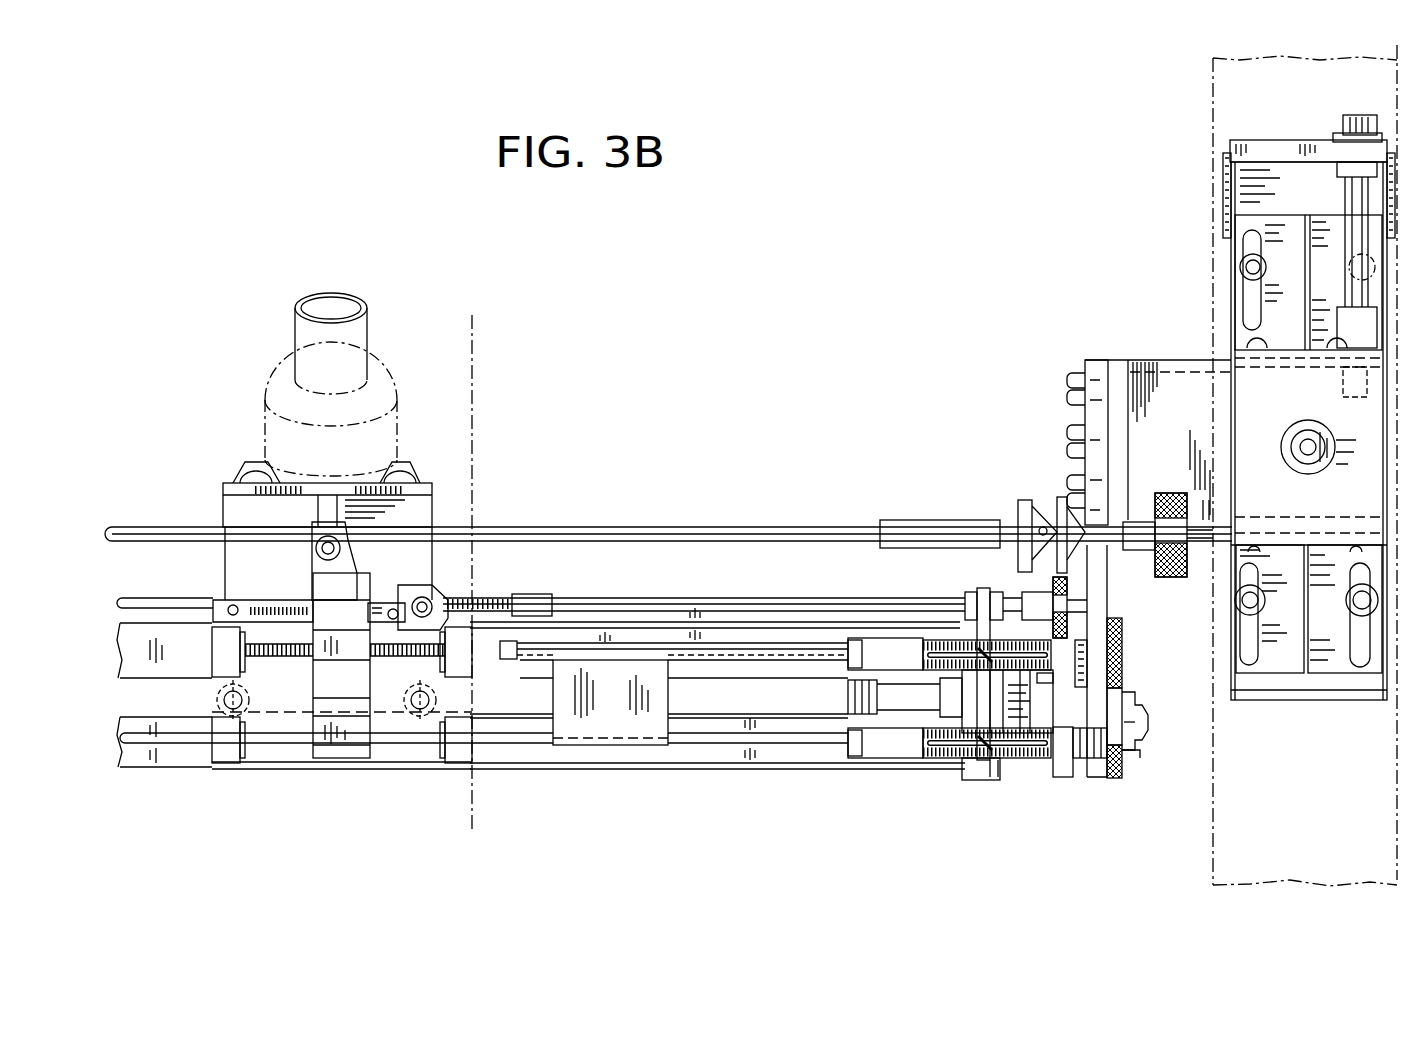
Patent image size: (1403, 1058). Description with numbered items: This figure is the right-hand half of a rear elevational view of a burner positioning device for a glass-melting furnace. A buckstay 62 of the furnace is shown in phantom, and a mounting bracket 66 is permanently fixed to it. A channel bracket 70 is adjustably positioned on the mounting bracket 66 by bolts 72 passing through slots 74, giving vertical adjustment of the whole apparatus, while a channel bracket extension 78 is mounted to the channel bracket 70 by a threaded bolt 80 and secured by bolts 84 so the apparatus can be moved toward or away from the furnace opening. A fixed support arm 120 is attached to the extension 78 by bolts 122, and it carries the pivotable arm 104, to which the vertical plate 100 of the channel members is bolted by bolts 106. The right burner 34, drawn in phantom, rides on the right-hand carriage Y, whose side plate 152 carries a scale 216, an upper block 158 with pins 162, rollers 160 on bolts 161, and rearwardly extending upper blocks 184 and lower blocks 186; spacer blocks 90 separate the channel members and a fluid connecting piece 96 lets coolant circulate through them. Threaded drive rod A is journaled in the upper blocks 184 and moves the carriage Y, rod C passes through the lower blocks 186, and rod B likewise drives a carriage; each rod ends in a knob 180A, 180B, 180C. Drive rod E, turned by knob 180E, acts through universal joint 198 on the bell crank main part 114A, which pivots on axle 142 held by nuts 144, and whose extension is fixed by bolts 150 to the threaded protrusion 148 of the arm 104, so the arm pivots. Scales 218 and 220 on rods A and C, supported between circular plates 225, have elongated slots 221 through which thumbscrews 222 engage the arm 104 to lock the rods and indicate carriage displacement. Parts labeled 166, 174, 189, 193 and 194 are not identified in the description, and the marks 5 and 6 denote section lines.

The right burner 34 is at (262, 400).
The mounting lug 174 is at (408, 468).
The right-hand carriage Y is at (220, 500).
The section line 6 is at (448, 322).
The section line 5 is at (1402, 840).
The buckstay 62 is at (1213, 78).
The mounting bracket 66 is at (1222, 184).
The bolts 72 is at (1262, 264).
The slots 74 is at (1262, 310).
The bolts 84 is at (1270, 345).
The channel bracket 70 is at (1300, 408).
The threaded bolt 80 is at (1292, 452).
The channel bracket extension 78 is at (1170, 344).
The fixed support arm 120 is at (1093, 360).
The bolts 122 is at (1066, 425).
The drive rod E is at (745, 515).
The L-shaped main part of bell crank 114A is at (1022, 500).
The universal joint 198 is at (1048, 490).
The knob 180E is at (1180, 577).
The drive rod B is at (745, 582).
The scale 216 is at (374, 609).
The bracket 166 is at (228, 550).
The lever 193 is at (312, 558).
The pivot 194 is at (342, 550).
The center block 189 is at (330, 758).
The side plate 152 is at (292, 770).
The lower blocks 186 is at (228, 762).
The upper blocks 184 is at (222, 638).
The bolts 161 is at (243, 700).
The rollers 160 is at (217, 700).
The upper block 158 is at (436, 600).
The pins 162 is at (432, 603).
The drive rod A is at (740, 672).
The spacer blocks 90 is at (655, 700).
The fluid connecting piece 96 is at (848, 697).
The drive rod C is at (738, 742).
The scale 218 is at (882, 638).
The scale 220 is at (878, 758).
The circular plates 225 is at (850, 640).
The elongated slots 221 is at (937, 638).
The pivotable arm 104 is at (985, 593).
The thumbscrews 222 is at (1010, 687).
The threaded protrusion 148 is at (1018, 760).
The vertical plate 100 is at (975, 780).
The bolts 106 is at (995, 778).
The bolts 150 is at (1070, 777).
The knob 180B is at (1067, 605).
The knob 180A is at (1122, 645).
The knob 180C is at (1115, 778).
The axle 142 is at (1163, 700).
The nuts 144 is at (1140, 745).